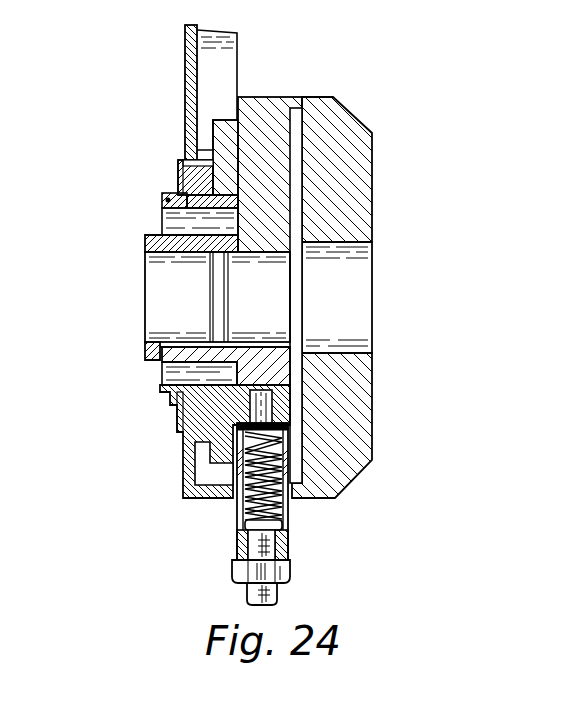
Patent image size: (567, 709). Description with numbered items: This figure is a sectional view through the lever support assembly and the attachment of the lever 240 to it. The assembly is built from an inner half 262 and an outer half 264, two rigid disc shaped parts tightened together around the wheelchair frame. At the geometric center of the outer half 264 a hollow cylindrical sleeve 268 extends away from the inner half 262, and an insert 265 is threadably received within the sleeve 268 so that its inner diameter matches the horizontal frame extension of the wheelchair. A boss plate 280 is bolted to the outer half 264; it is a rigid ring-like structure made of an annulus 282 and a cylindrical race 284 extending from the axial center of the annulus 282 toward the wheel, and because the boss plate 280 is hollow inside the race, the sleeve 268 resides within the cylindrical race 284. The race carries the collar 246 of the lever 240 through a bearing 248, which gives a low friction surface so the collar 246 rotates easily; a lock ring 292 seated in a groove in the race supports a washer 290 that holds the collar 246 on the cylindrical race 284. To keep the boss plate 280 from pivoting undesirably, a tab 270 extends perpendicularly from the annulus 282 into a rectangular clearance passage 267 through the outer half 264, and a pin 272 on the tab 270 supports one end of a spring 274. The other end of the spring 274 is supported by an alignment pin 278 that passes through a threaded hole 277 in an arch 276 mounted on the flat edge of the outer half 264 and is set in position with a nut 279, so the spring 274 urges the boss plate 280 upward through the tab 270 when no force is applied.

The lever 240 is at (185, 53).
The collar 246 is at (183, 486).
The bearing 248 is at (185, 160).
The inner half 262 is at (372, 172).
The outer half 264 is at (268, 96).
The insert 265 is at (163, 298).
The clearance passage 267 is at (288, 462).
The sleeve 268 is at (167, 228).
The tab 270 is at (265, 403).
The pin 272 is at (285, 425).
The spring 274 is at (290, 513).
The arch 276 is at (290, 531).
The threaded hole 277 is at (238, 533).
The alignment pin 278 is at (277, 591).
The nut 279 is at (232, 573).
The boss plate 280 is at (216, 121).
The annulus 282 is at (183, 455).
The cylindrical race 284 is at (165, 198).
The washer 290 is at (183, 160).
The lock ring 292 is at (178, 190).